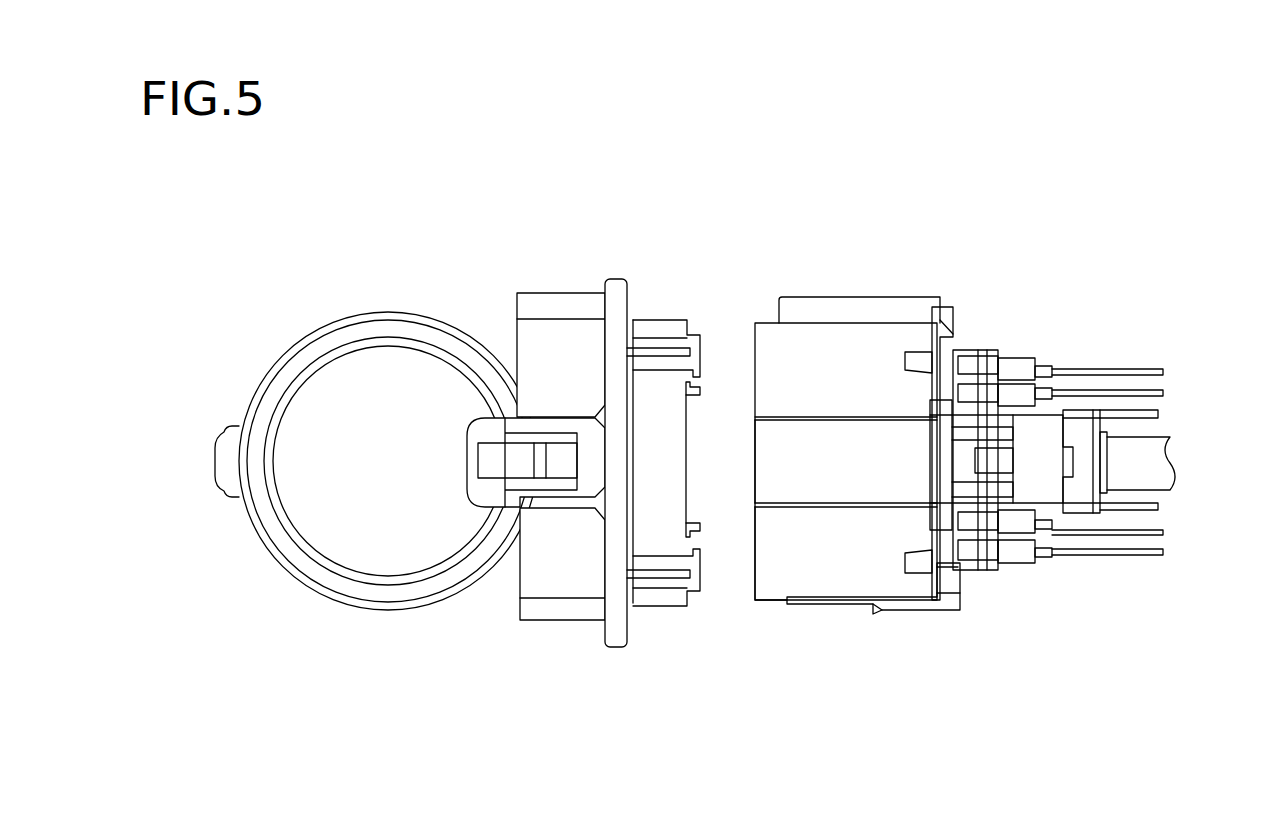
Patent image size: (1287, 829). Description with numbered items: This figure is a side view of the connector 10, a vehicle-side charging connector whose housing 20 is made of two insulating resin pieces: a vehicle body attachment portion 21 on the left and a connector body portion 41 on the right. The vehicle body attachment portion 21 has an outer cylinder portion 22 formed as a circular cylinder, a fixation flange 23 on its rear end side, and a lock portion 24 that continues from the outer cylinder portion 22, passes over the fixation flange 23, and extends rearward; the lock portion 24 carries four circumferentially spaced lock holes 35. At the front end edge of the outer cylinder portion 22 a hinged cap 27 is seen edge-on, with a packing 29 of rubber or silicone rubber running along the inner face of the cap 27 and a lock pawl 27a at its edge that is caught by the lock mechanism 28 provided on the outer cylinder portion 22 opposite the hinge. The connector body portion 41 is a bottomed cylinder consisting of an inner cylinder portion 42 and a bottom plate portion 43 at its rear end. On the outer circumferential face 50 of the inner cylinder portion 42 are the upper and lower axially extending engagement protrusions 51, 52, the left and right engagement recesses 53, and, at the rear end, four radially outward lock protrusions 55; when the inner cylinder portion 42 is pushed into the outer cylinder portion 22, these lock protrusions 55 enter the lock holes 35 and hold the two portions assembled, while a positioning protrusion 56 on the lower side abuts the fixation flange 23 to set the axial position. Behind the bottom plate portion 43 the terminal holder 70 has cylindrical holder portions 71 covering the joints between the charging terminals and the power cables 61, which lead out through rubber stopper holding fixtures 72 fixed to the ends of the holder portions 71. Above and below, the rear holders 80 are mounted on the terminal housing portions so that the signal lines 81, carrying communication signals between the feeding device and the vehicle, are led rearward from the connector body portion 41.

The connector 10 is at (528, 222).
The housing 20 is at (719, 172).
The vehicle body attachment portion 21 is at (622, 271).
The outer cylinder portion 22 is at (523, 588).
The fixation flange 23 is at (617, 650).
The lock portion 24 is at (657, 608).
The cap 27 is at (336, 305).
The lock pawl 27a is at (227, 438).
The lock mechanism 28 is at (480, 495).
The packing 29 is at (300, 567).
The lock holes 35 is at (666, 368).
The connector body portion 41 is at (783, 288).
The inner cylinder portion 42 is at (763, 600).
The bottom plate portion 43 is at (963, 592).
The outer circumferential face 50 is at (870, 345).
The engagement protrusion 51 is at (833, 293).
The engagement protrusion 52 is at (843, 606).
The engagement recesses 53 is at (832, 503).
The lock protrusions 55 is at (915, 355).
The positioning protrusion 56 is at (876, 612).
The power cables 61 is at (1163, 435).
The terminal holder 70 is at (1042, 409).
The holder portions 71 is at (1053, 433).
The rubber stopper holding fixtures 72 is at (1087, 420).
The rear holders 80 is at (991, 332).
The signal lines 81 is at (1158, 412).